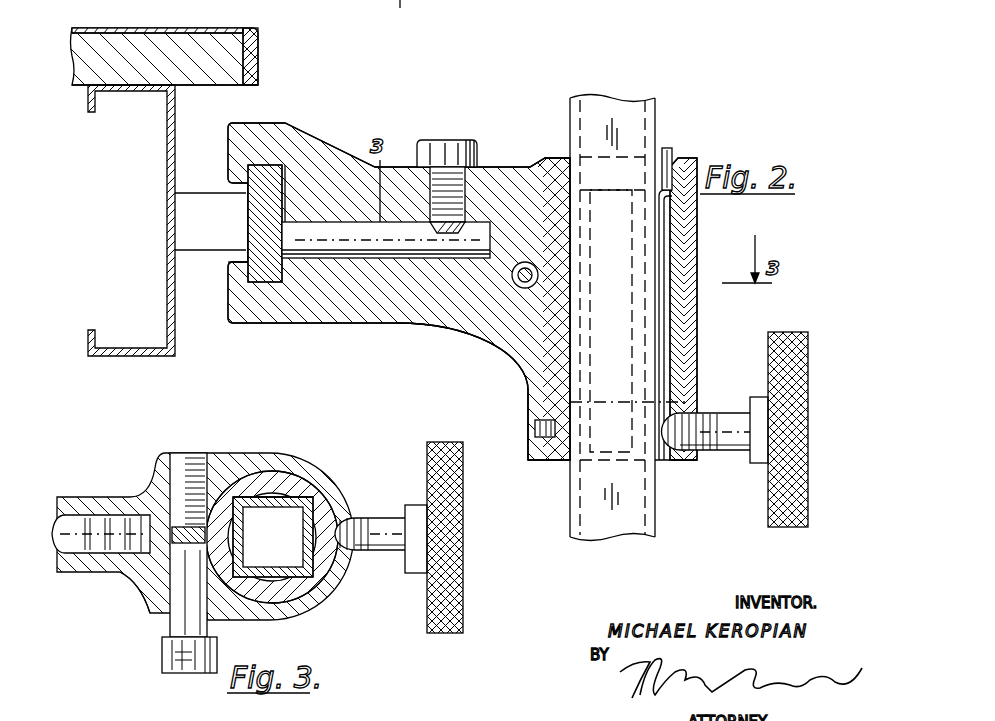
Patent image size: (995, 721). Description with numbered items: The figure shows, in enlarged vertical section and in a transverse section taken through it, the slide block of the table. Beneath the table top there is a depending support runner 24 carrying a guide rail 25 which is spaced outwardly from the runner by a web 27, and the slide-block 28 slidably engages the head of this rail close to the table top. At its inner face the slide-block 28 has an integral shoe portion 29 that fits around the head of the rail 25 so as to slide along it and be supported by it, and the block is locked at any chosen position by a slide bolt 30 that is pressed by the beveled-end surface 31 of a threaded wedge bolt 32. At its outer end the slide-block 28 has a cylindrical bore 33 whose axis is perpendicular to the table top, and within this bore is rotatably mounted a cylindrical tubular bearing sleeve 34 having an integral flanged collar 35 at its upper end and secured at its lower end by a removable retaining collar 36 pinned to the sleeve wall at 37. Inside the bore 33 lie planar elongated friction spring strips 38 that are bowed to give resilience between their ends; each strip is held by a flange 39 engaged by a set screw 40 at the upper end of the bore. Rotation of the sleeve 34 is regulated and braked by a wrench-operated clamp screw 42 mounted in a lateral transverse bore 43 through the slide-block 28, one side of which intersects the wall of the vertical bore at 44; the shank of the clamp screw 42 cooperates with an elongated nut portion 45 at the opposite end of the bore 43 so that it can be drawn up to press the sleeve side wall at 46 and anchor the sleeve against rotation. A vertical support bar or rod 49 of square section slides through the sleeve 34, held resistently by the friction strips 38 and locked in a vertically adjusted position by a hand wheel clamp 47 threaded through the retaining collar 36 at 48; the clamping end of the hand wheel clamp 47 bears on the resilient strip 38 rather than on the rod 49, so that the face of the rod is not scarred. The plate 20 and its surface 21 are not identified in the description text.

In FIG. 2, the support plate 20 is at (215, 85).
In FIG. 2, the upper surface of plate 21 is at (141, 28).
In FIG. 2, the support runner 24 is at (165, 165).
In FIG. 2, the guide rail 25 is at (257, 214).
In FIG. 2, the web 27 is at (185, 224).
In FIG. 2, the slide-block 28 is at (397, 326).
In FIG. 2, the shoe portion 29 is at (246, 277).
In FIG. 2, the slide bolt 30 is at (386, 240).
In FIG. 3, the slide bolt 30 is at (71, 515).
In FIG. 2, the beveled-end surface 31 is at (433, 228).
In FIG. 2, the threaded wedge bolt 32 is at (466, 140).
In FIG. 2, the cylindrical bore 33 is at (572, 338).
In FIG. 2, the cylindrical tubular bearing sleeve 34 is at (560, 385).
In FIG. 2, the flanged collar 35 is at (548, 158).
In FIG. 2, the retaining collar 36 is at (528, 452).
In FIG. 2, the pin 37 is at (535, 428).
In FIG. 2, the friction spring strip 38 is at (660, 279).
In FIG. 3, the friction spring strip 38 is at (288, 588).
In FIG. 2, the flange 39 is at (668, 201).
In FIG. 2, the set screw 40 is at (675, 160).
In FIG. 2, the clamp screw 42 is at (536, 273).
In FIG. 3, the clamp screw 42 is at (186, 673).
In FIG. 3, the lateral transverse bore 43 is at (170, 600).
In FIG. 3, the intersection 44 is at (207, 553).
In FIG. 3, the elongated nut portion 45 is at (181, 453).
In FIG. 3, the pressure contact 46 is at (225, 460).
In FIG. 2, the hand wheel clamp 47 is at (808, 368).
In FIG. 2, the threaded connection 48 is at (690, 455).
In FIG. 2, the vertical support bar or rod 49 is at (650, 118).
In FIG. 3, the vertical support bar or rod 49 is at (276, 500).